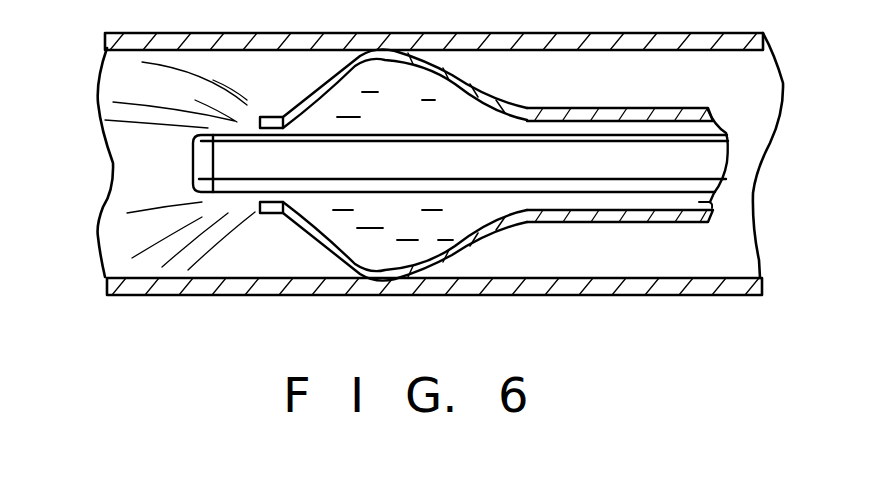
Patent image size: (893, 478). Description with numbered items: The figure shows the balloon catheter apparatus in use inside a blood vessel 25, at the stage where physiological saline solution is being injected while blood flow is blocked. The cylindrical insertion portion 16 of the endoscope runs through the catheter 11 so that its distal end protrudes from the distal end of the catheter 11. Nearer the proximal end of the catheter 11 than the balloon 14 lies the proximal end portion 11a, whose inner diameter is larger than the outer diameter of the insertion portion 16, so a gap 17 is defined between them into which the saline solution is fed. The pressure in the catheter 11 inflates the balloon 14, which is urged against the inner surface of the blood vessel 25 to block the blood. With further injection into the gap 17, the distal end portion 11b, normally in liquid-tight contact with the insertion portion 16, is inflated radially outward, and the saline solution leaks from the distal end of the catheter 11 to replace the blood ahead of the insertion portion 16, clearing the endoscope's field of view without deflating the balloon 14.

The catheter 11 is at (627, 222).
The proximal end portion 11a is at (576, 221).
The distal end portion 11b is at (283, 118).
The balloon 14 is at (495, 98).
The insertion portion 16 is at (650, 157).
The gap 17 is at (705, 208).
The blood vessel 25 is at (115, 238).